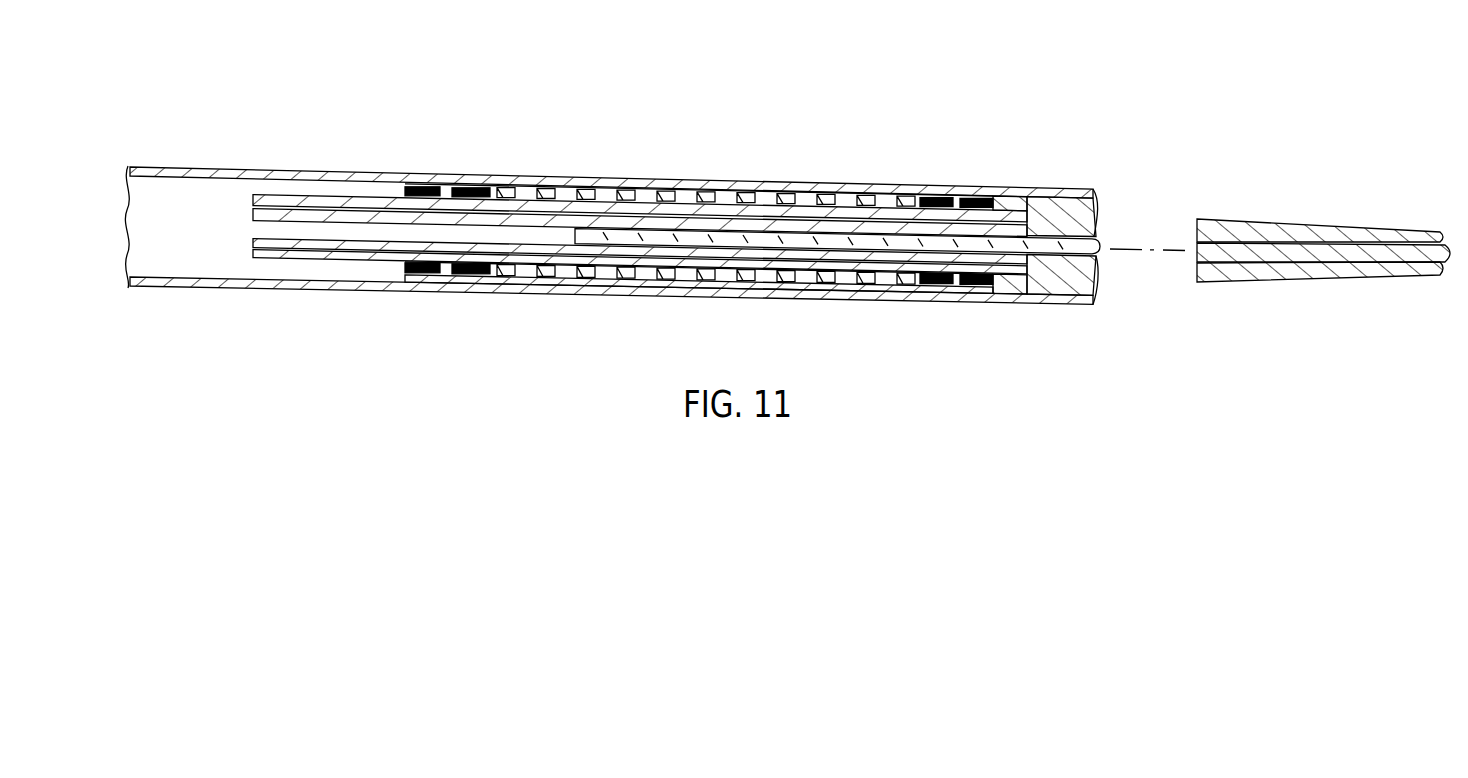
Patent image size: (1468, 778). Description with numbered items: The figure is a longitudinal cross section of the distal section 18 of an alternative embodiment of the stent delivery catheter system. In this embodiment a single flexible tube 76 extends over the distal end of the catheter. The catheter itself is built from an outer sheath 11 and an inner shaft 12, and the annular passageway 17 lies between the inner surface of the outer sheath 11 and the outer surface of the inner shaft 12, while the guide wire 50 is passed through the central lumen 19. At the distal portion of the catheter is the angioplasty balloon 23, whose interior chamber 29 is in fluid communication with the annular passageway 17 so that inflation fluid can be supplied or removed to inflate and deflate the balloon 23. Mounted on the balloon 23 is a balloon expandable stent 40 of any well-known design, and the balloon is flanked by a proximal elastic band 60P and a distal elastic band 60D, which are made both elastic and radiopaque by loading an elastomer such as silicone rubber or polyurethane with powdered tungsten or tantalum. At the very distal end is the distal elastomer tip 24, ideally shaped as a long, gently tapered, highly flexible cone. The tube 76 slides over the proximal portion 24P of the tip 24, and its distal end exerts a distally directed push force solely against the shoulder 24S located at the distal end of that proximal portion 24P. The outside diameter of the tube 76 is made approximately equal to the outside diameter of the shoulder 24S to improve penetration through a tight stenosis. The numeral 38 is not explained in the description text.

The distal section 18 is at (556, 78).
The flexible tube 76 is at (320, 171).
The outer sheath 38 is at (215, 293).
The proximal elastic band 60P is at (470, 181).
The distal elastic band 60D is at (945, 186).
The balloon expandable stent 40 is at (658, 191).
The angioplasty balloon 23 is at (795, 193).
The annular passageway 17 is at (252, 218).
The central lumen 19 is at (257, 230).
The inner shaft 12 is at (282, 260).
The outer sheath 11 is at (317, 260).
The interior chamber 29 is at (545, 284).
The distal elastomer tip 24 is at (1057, 190).
The proximal portion of the tip 24P is at (1013, 300).
The shoulder 24S is at (1030, 298).
The guide wire 50 is at (1450, 265).